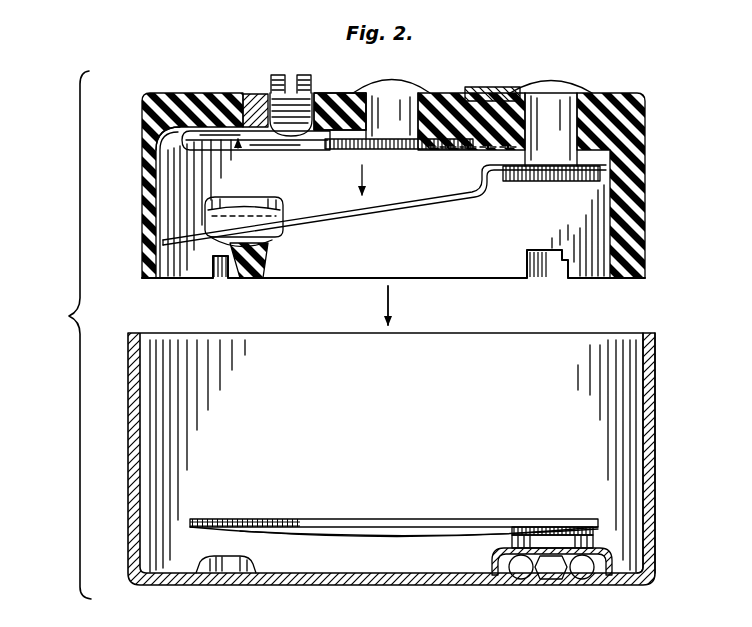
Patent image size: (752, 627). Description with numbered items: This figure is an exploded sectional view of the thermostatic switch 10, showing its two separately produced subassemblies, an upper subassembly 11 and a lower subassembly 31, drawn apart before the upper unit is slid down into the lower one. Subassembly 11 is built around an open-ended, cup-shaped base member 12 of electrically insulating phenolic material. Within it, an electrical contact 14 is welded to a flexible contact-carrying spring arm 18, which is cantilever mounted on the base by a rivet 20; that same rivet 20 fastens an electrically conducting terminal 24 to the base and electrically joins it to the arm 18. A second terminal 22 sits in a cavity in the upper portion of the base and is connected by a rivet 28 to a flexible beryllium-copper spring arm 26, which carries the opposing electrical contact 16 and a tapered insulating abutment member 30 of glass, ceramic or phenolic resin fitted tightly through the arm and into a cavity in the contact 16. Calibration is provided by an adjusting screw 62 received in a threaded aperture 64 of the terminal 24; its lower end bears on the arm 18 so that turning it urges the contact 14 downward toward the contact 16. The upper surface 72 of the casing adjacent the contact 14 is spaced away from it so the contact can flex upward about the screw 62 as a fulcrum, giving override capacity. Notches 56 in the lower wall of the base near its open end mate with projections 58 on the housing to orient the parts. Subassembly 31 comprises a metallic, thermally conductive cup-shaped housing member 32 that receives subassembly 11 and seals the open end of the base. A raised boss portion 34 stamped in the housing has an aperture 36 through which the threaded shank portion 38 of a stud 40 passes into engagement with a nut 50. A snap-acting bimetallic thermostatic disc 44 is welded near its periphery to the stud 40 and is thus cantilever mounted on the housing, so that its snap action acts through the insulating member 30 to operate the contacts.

The thermostatic switch 10 is at (58, 283).
The subassembly 11 is at (647, 211).
The cup-shaped base member 12 is at (635, 124).
The electrical contact 14 is at (272, 156).
The electrical contact 16 is at (234, 204).
The contact-carrying spring arm 18 is at (338, 152).
The rivet 20 is at (390, 97).
The terminal 22 is at (490, 92).
The terminal 24 is at (335, 92).
The spring arm 26 is at (407, 204).
The rivet 28 is at (551, 93).
The tapered insulating abutment member 30 is at (241, 278).
The subassembly 31 is at (661, 490).
The cup-shaped housing member 32 is at (648, 414).
The raised boss portion 34 is at (492, 562).
The aperture 36 is at (537, 548).
The threaded shank portion 38 is at (530, 580).
The stud 40 is at (592, 546).
The snap-acting thermostatic disc 44 is at (324, 535).
The nut 50 is at (561, 578).
The notches 56 is at (219, 275).
The projections 58 is at (205, 560).
The adjusting screw 62 is at (272, 80).
The threaded aperture 64 is at (270, 90).
The upper surface 72 is at (214, 93).